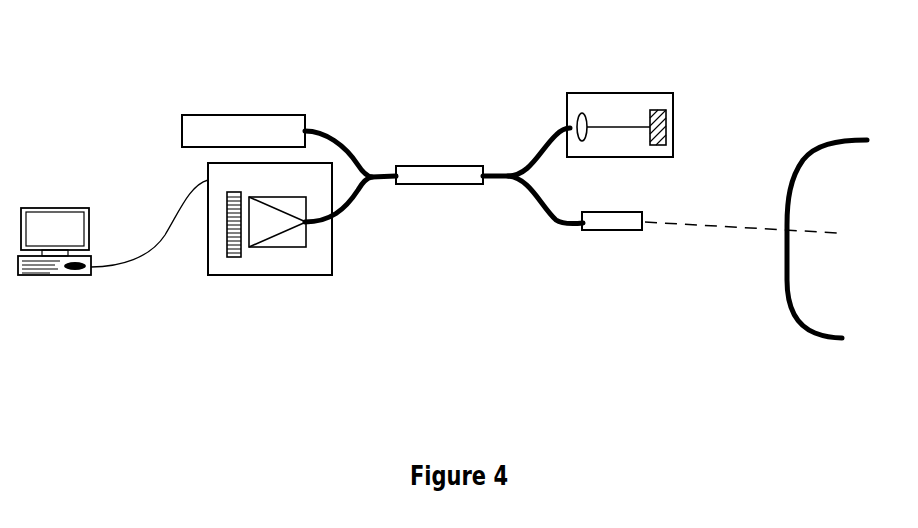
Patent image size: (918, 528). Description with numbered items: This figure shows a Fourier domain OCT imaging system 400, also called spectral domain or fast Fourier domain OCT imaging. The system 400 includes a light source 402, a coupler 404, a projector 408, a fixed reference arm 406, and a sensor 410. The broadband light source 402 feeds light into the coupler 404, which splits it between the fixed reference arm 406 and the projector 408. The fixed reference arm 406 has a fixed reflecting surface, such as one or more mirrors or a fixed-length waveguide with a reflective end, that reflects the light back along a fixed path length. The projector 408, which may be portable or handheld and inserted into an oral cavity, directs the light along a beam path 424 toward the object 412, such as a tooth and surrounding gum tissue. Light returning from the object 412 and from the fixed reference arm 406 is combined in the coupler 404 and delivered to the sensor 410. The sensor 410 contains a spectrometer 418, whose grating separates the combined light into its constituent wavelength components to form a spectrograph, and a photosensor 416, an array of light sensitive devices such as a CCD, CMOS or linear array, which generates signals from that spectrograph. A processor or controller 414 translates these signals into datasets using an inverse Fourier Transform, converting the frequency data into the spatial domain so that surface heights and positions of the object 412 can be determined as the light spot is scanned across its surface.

The Fourier domain OCT imaging system 400 is at (422, 40).
The light source 402 is at (212, 130).
The coupler 404 is at (459, 172).
The fixed reference arm 406 is at (598, 92).
The projector 408 is at (628, 230).
The sensor 410 is at (333, 235).
The object 412 is at (807, 165).
The processor or controller 414 is at (72, 212).
The photosensor 416 is at (230, 208).
The spectrometer 418 is at (287, 247).
The optical axis 424 is at (730, 225).